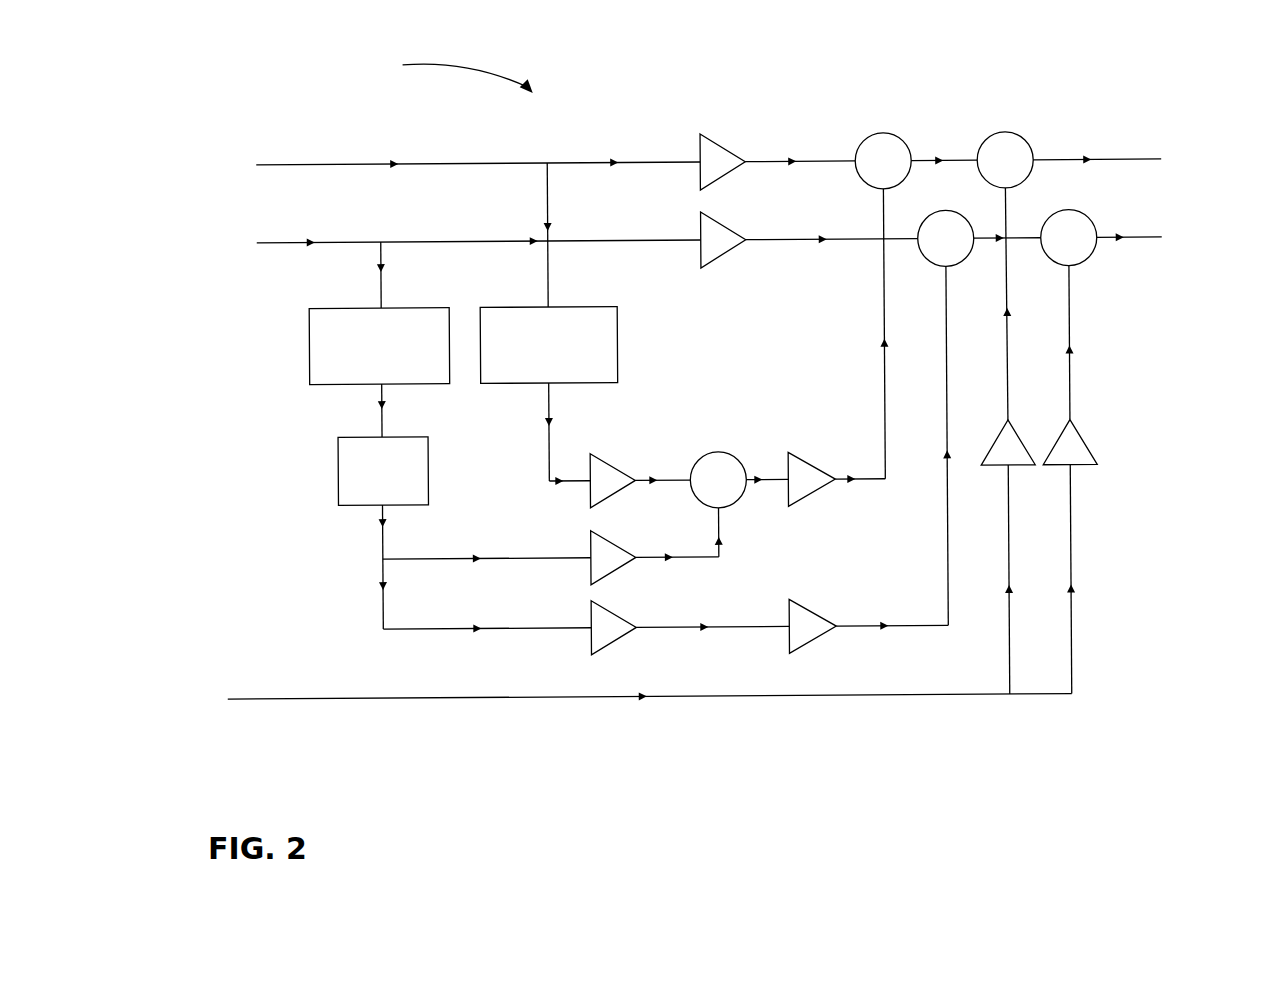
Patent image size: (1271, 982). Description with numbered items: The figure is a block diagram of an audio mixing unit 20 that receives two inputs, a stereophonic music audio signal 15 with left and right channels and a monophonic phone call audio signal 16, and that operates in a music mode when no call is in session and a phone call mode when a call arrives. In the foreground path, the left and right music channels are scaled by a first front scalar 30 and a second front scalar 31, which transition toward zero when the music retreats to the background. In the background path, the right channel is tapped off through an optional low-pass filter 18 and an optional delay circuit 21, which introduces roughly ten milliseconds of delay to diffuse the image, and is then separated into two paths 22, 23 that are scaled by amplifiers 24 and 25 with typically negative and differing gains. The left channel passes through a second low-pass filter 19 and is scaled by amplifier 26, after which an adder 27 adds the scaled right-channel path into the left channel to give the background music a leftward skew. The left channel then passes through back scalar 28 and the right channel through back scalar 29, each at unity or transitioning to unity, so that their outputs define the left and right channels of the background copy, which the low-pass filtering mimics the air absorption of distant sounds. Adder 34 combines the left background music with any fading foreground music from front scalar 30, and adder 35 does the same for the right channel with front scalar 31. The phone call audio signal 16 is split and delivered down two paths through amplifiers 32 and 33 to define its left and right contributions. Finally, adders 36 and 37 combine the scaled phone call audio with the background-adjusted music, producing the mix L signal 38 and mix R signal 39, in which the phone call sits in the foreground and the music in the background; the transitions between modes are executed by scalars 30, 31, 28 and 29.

The music audio signal 15 is at (421, 203).
The phone call audio signal 16 is at (612, 692).
The low-pass filter 18 is at (310, 343).
The second low-pass filter 19 is at (517, 383).
The mixing unit 20 is at (449, 72).
The delay circuit 21 is at (338, 487).
The path 22 is at (458, 562).
The path 23 is at (458, 633).
The amplifier 24 is at (625, 622).
The amplifier 25 is at (625, 552).
The amplifier 26 is at (620, 472).
The adder 27 is at (737, 452).
The back scalar 28 is at (810, 497).
The back scalar 29 is at (810, 645).
The front scalar 30 is at (720, 183).
The front scalar 31 is at (745, 239).
The amplifier 32 is at (1027, 450).
The amplifier 33 is at (1085, 448).
The adder 34 is at (906, 138).
The adder 35 is at (972, 253).
The adder 36 is at (1028, 138).
The adder 37 is at (1088, 254).
The mix L signal 38 is at (1136, 166).
The mix R signal 39 is at (1169, 249).